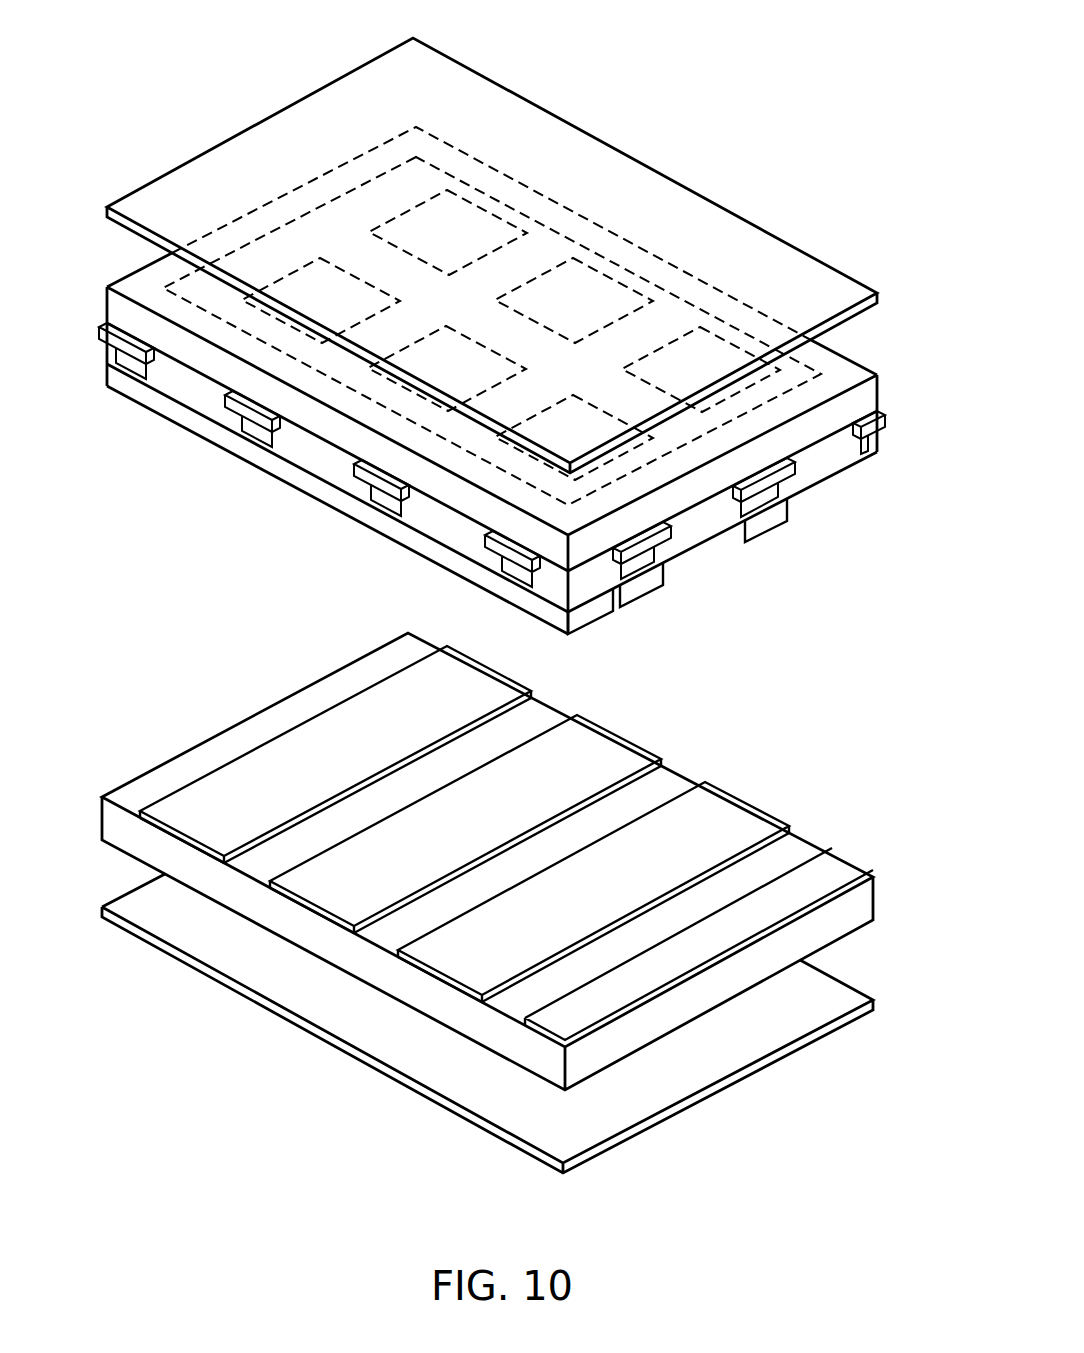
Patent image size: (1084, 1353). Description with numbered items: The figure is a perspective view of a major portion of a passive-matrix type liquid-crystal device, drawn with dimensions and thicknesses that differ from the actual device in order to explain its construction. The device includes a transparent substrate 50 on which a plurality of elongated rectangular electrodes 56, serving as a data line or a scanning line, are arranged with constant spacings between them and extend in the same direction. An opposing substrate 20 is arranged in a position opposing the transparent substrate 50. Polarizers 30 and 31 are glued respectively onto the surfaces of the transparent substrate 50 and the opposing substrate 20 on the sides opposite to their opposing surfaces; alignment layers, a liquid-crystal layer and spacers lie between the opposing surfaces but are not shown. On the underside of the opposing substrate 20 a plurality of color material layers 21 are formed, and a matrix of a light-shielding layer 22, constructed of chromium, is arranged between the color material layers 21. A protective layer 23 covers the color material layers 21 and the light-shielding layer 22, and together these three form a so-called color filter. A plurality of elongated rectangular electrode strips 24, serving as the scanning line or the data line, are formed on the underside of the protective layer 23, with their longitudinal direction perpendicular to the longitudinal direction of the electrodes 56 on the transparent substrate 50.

The polarizer 31 is at (740, 217).
The opposing substrate 20 is at (880, 394).
The color material layers 21 is at (292, 408).
The light-shielding layer 22 is at (243, 395).
The protective layer 23 is at (550, 598).
The electrode strips 24 is at (827, 504).
The transparent substrate 50 is at (865, 905).
The electrodes 56 is at (290, 773).
The polarizer 30 is at (813, 1043).